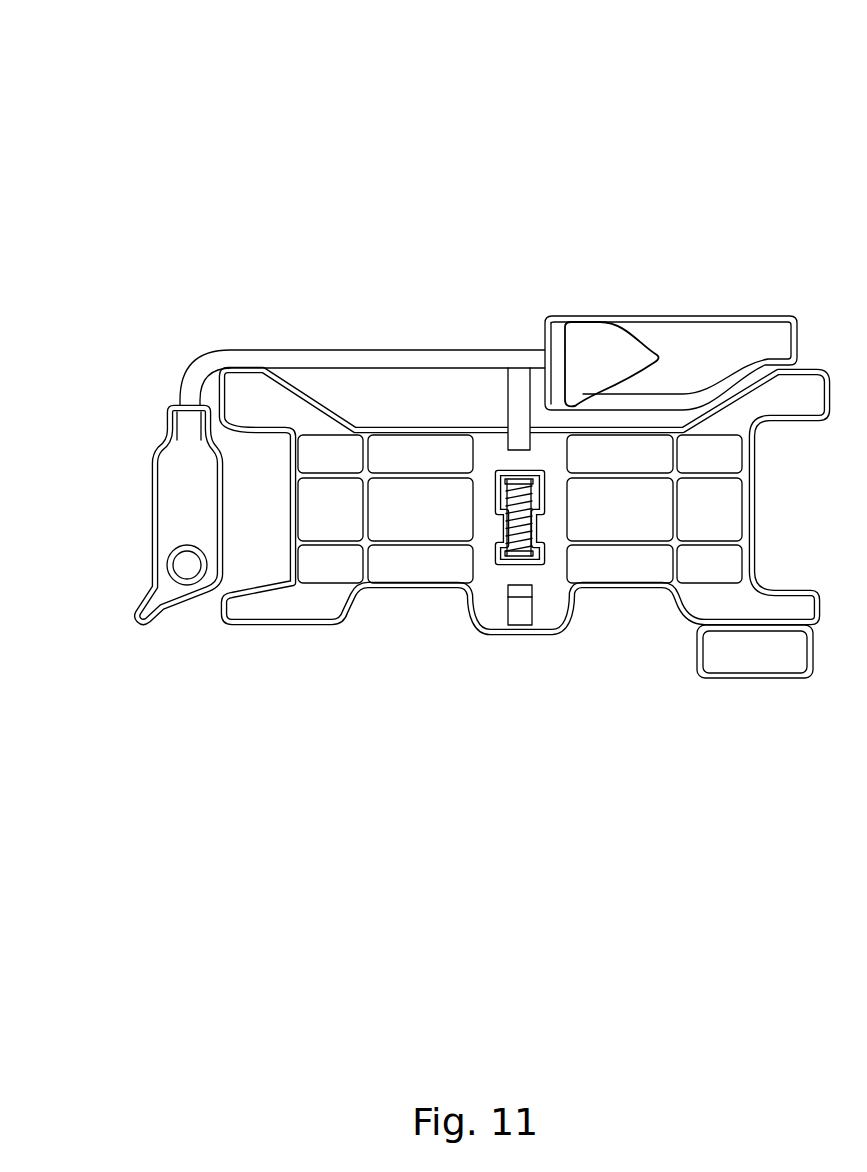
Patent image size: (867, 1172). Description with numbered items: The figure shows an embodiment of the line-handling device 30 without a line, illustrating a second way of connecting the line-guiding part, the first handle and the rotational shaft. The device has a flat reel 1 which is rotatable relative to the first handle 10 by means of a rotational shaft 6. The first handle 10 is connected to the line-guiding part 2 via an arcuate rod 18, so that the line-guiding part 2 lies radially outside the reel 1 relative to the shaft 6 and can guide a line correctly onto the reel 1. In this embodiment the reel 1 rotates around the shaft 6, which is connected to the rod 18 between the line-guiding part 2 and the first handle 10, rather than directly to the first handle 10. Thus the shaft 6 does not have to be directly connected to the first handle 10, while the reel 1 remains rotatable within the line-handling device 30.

The flat reel 1 is at (586, 590).
The line-guiding part 2 is at (155, 463).
The rotational shaft 6 is at (507, 432).
The first handle 10 is at (672, 317).
The arcuate rod 18 is at (388, 348).
The line-handling device 30 is at (447, 431).